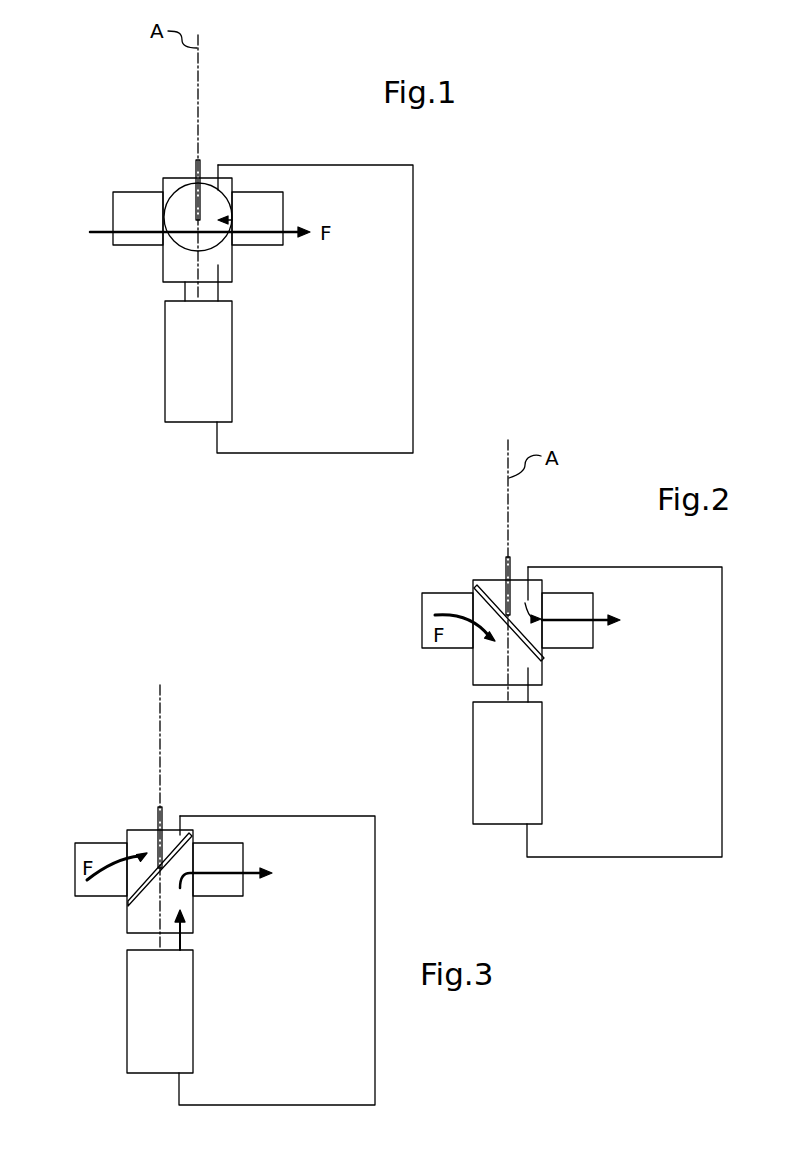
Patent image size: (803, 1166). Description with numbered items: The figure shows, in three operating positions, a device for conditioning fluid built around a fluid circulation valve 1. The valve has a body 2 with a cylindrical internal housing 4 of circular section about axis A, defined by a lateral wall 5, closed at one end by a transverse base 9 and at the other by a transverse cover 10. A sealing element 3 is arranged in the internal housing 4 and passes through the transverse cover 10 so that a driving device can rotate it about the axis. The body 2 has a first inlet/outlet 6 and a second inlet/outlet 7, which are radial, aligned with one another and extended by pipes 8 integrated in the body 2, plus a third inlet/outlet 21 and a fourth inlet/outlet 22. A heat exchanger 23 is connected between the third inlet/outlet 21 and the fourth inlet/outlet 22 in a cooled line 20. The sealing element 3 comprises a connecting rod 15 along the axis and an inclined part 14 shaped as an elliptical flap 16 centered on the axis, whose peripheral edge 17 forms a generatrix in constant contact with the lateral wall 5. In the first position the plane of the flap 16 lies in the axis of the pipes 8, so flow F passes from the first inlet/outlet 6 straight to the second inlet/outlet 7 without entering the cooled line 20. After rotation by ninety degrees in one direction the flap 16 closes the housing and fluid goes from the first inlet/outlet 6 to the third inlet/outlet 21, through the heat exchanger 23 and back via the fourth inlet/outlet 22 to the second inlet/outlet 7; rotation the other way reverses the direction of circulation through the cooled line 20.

In FIG. 1, the fluid circulation valve 1 is at (87, 329).
In FIG. 2, the fluid circulation valve 1 is at (443, 723).
In FIG. 3, the fluid circulation valve 1 is at (68, 821).
In FIG. 1, the body 2 is at (162, 253).
In FIG. 1, the sealing element 3 is at (236, 220).
In FIG. 2, the sealing element 3 is at (500, 560).
In FIG. 3, the sealing element 3 is at (146, 814).
In FIG. 1, the internal housing 4 is at (178, 268).
In FIG. 2, the internal housing 4 is at (518, 590).
In FIG. 3, the internal housing 4 is at (153, 922).
In FIG. 1, the lateral wall 5 is at (178, 176).
In FIG. 2, the lateral wall 5 is at (487, 578).
In FIG. 3, the lateral wall 5 is at (137, 828).
In FIG. 1, the first inlet/outlet 6 is at (163, 203).
In FIG. 2, the first inlet/outlet 6 is at (473, 603).
In FIG. 3, the first inlet/outlet 6 is at (127, 850).
In FIG. 1, the second inlet/outlet 7 is at (236, 246).
In FIG. 2, the second inlet/outlet 7 is at (542, 633).
In FIG. 3, the second inlet/outlet 7 is at (197, 887).
In FIG. 1, the pipes 8 is at (116, 192).
In FIG. 1, the transverse base 9 is at (178, 301).
In FIG. 1, the transverse cover 10 is at (196, 166).
In FIG. 1, the inclined part 14 is at (153, 213).
In FIG. 1, the connecting rod 15 is at (200, 168).
In FIG. 3, the connecting rod 15 is at (168, 812).
In FIG. 1, the elliptical flap 16 is at (218, 207).
In FIG. 2, the elliptical flap 16 is at (527, 647).
In FIG. 3, the elliptical flap 16 is at (148, 890).
In FIG. 2, the peripheral edge 17 is at (473, 590).
In FIG. 3, the peripheral edge 17 is at (127, 903).
In FIG. 1, the cooled line 20 is at (423, 357).
In FIG. 2, the cooled line 20 is at (730, 836).
In FIG. 3, the cooled line 20 is at (385, 1066).
In FIG. 1, the third inlet/outlet 21 is at (233, 282).
In FIG. 2, the third inlet/outlet 21 is at (542, 677).
In FIG. 3, the third inlet/outlet 21 is at (193, 927).
In FIG. 1, the fourth inlet/outlet 22 is at (219, 178).
In FIG. 2, the fourth inlet/outlet 22 is at (543, 582).
In FIG. 3, the fourth inlet/outlet 22 is at (182, 822).
In FIG. 1, the heat exchanger 23 is at (165, 407).
In FIG. 2, the heat exchanger 23 is at (528, 792).
In FIG. 3, the heat exchanger 23 is at (127, 1050).